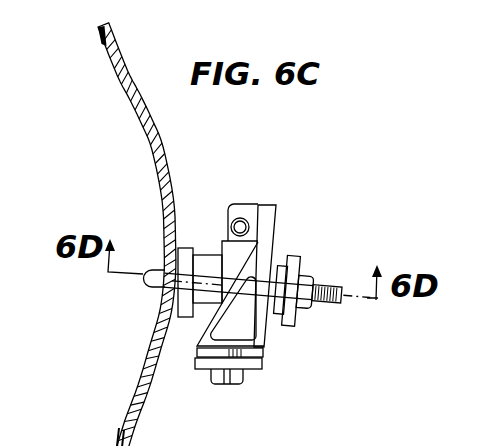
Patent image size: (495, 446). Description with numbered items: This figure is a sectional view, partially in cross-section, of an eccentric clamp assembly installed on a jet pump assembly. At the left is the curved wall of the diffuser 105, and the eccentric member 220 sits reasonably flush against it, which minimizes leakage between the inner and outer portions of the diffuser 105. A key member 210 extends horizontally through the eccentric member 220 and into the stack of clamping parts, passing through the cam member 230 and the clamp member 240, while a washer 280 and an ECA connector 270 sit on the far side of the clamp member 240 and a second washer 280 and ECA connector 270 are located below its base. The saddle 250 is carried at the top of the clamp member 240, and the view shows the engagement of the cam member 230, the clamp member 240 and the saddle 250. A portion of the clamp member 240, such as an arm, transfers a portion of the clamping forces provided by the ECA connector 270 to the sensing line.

The diffuser 105 is at (122, 86).
The key member 210 is at (147, 288).
The eccentric member 220 is at (178, 318).
The cam member 230 is at (220, 243).
The clamp member 240 is at (266, 342).
The saddle 250 is at (255, 237).
The ECA connector 270 is at (312, 279).
The washer 280 is at (296, 323).